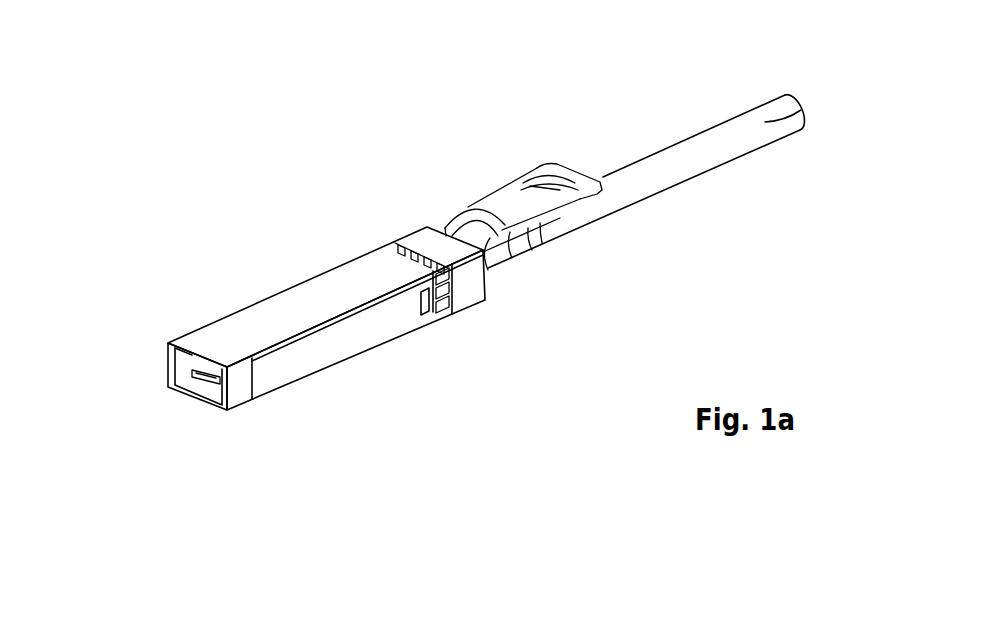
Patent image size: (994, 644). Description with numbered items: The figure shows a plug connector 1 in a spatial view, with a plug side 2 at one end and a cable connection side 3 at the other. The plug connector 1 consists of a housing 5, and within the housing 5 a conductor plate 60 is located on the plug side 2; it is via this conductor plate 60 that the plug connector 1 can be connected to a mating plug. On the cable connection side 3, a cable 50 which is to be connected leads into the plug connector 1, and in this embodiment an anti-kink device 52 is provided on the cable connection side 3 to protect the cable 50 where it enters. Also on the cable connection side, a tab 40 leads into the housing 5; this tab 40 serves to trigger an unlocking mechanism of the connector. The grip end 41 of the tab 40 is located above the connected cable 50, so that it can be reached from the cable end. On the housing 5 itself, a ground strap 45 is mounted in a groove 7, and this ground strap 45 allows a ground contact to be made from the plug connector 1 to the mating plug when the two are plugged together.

The plug connector 1 is at (230, 177).
The plug side 2 is at (157, 395).
The cable connection side 3 is at (615, 265).
The housing 5 is at (265, 327).
The groove 7 is at (447, 300).
The tab 40 is at (502, 133).
The grip end 41 is at (560, 170).
The ground strap 45 is at (417, 233).
The cable 50 is at (800, 115).
The anti-kink device 52 is at (505, 274).
The conductor plate 60 is at (203, 381).